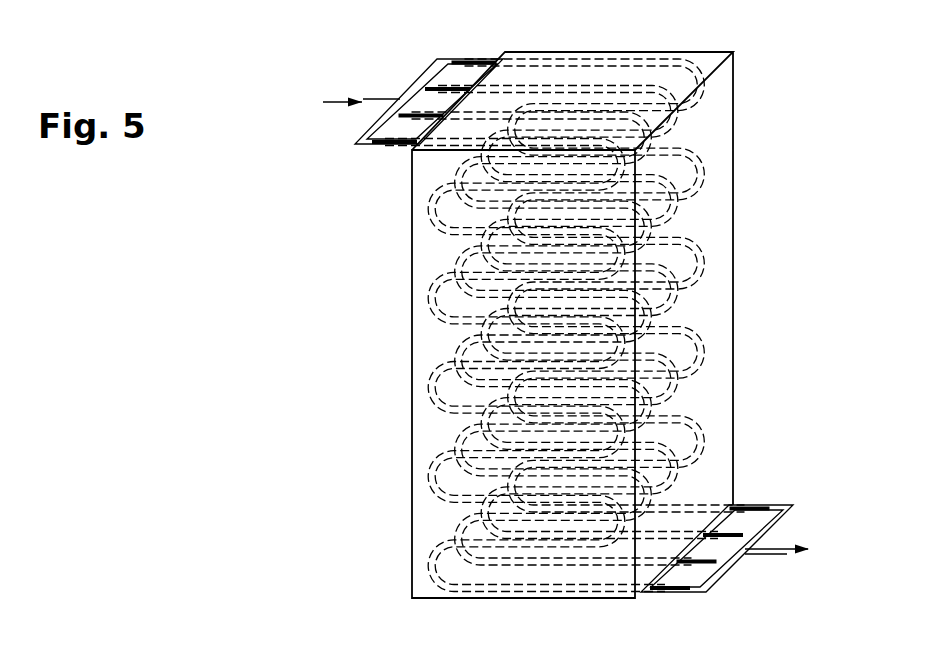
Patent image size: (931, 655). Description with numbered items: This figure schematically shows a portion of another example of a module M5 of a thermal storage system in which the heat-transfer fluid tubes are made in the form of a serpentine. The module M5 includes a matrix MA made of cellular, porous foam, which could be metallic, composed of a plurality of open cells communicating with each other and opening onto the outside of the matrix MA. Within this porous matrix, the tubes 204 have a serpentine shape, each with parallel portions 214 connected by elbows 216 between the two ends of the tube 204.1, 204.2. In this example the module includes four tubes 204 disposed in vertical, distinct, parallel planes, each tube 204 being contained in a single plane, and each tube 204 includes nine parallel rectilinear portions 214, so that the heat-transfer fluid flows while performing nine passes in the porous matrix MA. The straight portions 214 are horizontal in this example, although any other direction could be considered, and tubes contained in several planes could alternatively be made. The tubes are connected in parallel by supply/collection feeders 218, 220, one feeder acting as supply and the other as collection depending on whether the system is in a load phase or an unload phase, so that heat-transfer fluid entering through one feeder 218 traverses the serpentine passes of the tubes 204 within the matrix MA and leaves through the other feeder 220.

The module M5 is at (302, 193).
The matrix MA is at (412, 395).
The tube 204 is at (583, 58).
The first end of the tube 204.1 is at (472, 58).
The second end of the tube 204.2 is at (670, 590).
The parallel rectilinear portions 214 is at (628, 62).
The elbows 216 is at (703, 178).
The supply/collection feeder 218 is at (413, 72).
The supply/collection feeder 220 is at (790, 525).